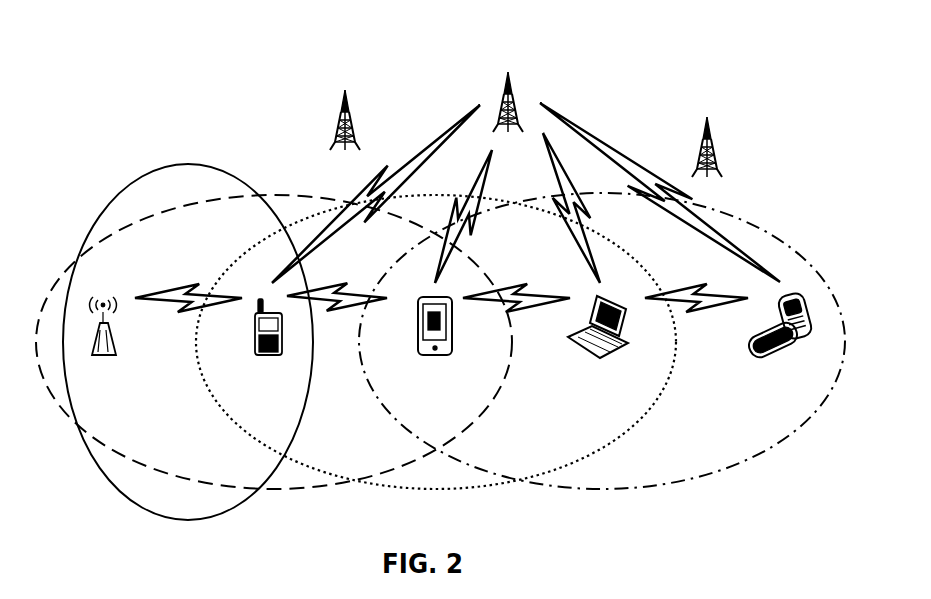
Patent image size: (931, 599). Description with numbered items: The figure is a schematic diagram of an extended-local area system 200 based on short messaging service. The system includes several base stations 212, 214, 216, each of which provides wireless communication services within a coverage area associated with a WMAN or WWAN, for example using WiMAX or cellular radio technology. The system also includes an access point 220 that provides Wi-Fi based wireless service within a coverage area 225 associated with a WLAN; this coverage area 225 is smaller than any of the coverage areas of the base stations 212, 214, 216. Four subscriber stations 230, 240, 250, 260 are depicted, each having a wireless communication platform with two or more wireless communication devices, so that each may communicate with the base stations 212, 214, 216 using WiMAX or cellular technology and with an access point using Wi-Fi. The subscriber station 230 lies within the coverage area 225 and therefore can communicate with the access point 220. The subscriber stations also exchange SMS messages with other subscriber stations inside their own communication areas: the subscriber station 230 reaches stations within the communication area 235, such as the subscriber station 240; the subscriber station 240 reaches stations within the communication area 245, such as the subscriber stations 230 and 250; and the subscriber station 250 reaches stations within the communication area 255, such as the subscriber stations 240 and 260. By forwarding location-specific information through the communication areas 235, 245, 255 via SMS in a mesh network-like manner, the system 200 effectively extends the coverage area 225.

The extended-local area system 200 is at (119, 40).
The base station 212 is at (342, 113).
The base station 214 is at (505, 92).
The base station 216 is at (712, 135).
The access point 220 is at (107, 355).
The coverage area 225 is at (190, 165).
The subscriber station 230 is at (272, 355).
The communication area 235 is at (268, 488).
The subscriber station 240 is at (435, 355).
The communication area 245 is at (435, 488).
The subscriber station 250 is at (603, 355).
The communication area 255 is at (602, 488).
The subscriber station 260 is at (770, 353).